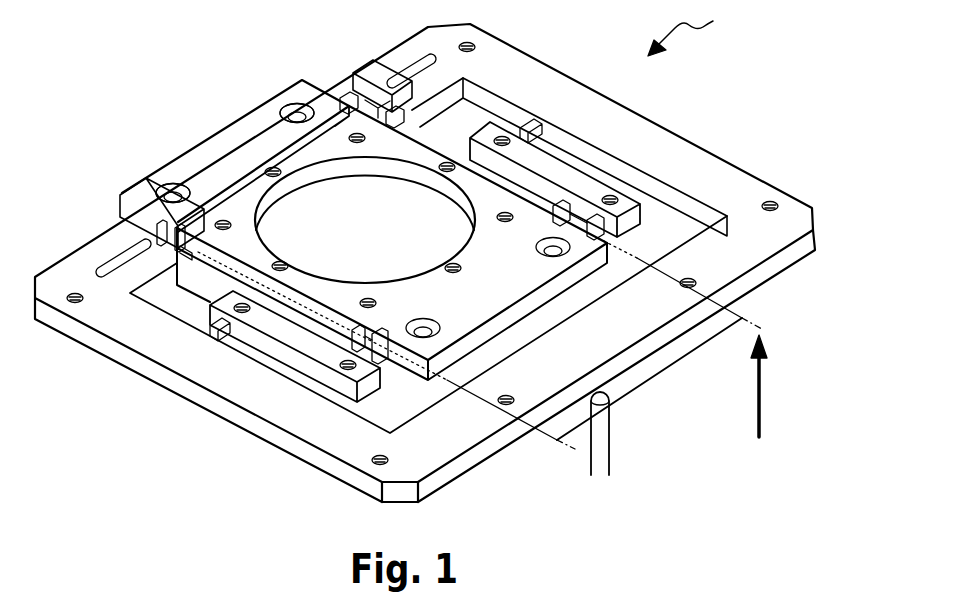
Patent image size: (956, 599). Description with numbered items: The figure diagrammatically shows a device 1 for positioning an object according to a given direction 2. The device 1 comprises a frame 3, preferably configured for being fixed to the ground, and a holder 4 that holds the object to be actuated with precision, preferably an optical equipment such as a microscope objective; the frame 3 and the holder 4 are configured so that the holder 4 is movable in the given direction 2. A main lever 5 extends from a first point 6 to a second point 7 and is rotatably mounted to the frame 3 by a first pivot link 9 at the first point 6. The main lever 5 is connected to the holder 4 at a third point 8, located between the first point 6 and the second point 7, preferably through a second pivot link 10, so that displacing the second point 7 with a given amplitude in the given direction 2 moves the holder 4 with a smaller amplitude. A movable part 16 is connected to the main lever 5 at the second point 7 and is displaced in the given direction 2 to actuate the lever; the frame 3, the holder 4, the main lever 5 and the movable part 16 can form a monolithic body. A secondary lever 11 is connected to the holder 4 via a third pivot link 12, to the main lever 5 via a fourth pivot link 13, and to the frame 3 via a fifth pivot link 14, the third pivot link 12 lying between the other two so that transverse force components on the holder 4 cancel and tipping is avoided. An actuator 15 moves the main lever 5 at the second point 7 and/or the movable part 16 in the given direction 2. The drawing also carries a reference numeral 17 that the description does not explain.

The device 1 is at (684, 28).
The given direction 2 is at (761, 400).
The frame 3 is at (240, 138).
The holder 4 is at (336, 172).
The main lever 5 is at (690, 154).
The first point 6 is at (160, 216).
The second point 7 is at (678, 280).
The third point 8 is at (194, 242).
The first pivot link 9 is at (138, 226).
The second pivot link 10 is at (174, 206).
The secondary lever 11 is at (541, 164).
The third pivot link 12 is at (568, 192).
The fourth pivot link 13 is at (528, 120).
The fifth pivot link 14 is at (550, 240).
The actuator 15 is at (606, 440).
The movable part 16 is at (654, 376).
The guide edge 17 is at (588, 228).